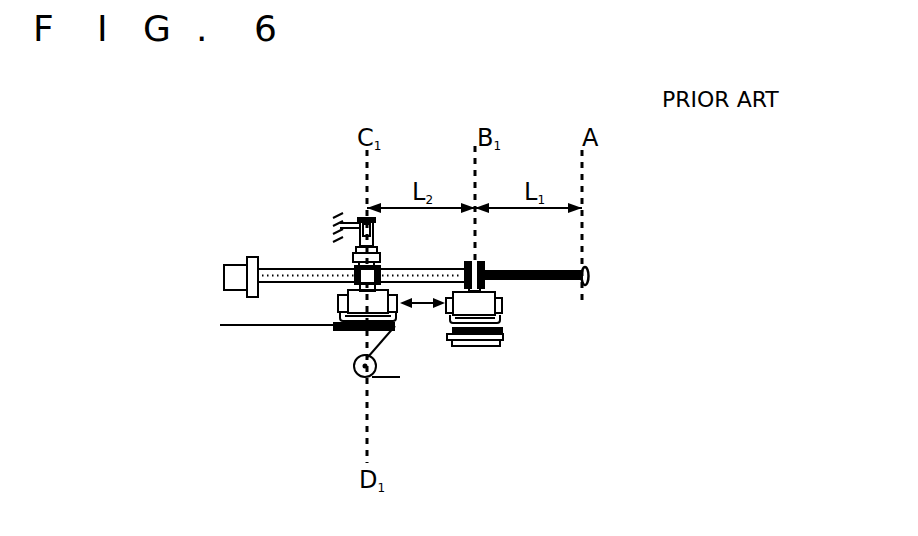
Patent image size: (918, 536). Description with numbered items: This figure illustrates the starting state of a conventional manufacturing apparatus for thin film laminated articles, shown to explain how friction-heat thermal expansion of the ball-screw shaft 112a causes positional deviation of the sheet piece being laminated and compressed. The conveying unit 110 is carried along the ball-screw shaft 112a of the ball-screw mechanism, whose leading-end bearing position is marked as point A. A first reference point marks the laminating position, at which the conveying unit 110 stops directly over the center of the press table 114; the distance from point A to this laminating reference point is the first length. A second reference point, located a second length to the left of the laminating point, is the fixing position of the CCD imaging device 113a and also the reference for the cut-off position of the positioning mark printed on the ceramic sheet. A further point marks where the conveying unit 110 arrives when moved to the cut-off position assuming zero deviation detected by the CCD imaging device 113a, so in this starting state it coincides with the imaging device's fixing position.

The conveying unit 110 is at (503, 311).
The ball-screw shaft 112a is at (547, 279).
The CCD imaging device 113a is at (360, 218).
The press table 114 is at (477, 346).